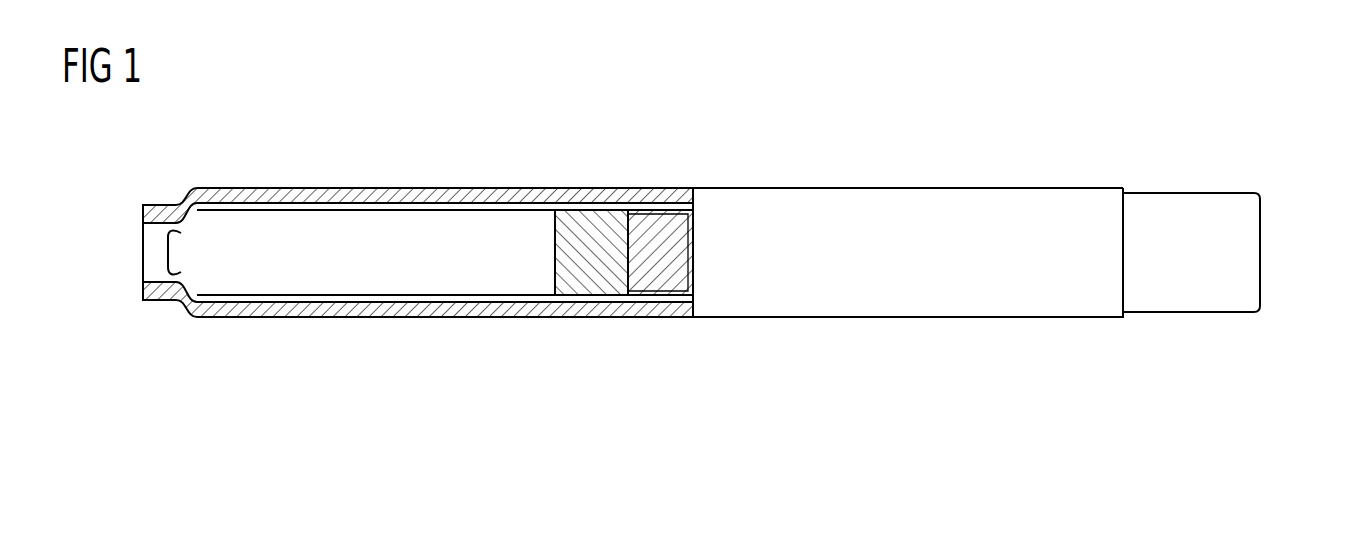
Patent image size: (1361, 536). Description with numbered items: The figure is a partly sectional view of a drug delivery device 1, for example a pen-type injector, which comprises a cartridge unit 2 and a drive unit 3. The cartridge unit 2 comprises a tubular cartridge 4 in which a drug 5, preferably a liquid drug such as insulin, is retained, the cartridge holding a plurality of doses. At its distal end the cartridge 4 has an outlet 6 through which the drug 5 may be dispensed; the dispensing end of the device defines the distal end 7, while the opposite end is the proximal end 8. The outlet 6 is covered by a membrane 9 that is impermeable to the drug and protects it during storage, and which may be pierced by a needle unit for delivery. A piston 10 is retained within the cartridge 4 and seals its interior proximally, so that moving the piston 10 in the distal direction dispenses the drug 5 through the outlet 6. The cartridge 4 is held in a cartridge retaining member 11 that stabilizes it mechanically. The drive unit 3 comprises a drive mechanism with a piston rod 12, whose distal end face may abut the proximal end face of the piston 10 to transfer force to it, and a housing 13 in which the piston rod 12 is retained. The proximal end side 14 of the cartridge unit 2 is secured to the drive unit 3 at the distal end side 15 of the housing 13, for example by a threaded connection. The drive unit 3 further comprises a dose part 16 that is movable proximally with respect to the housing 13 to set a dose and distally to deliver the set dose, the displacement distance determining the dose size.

The drug delivery device 1 is at (1022, 100).
The cartridge unit 2 is at (440, 365).
The drive unit 3 is at (924, 366).
The cartridge 4 is at (487, 210).
The drug 5 is at (427, 222).
The outlet 6 is at (176, 250).
The distal end 7 is at (118, 256).
The proximal end 8 is at (1292, 249).
The membrane 9 is at (163, 265).
The piston 10 is at (596, 218).
The cartridge retaining member 11 is at (533, 195).
The piston rod 12 is at (666, 222).
The housing 13 is at (880, 198).
The proximal end side 14 is at (688, 318).
The distal end side 15 is at (703, 194).
The dose part 16 is at (1200, 205).